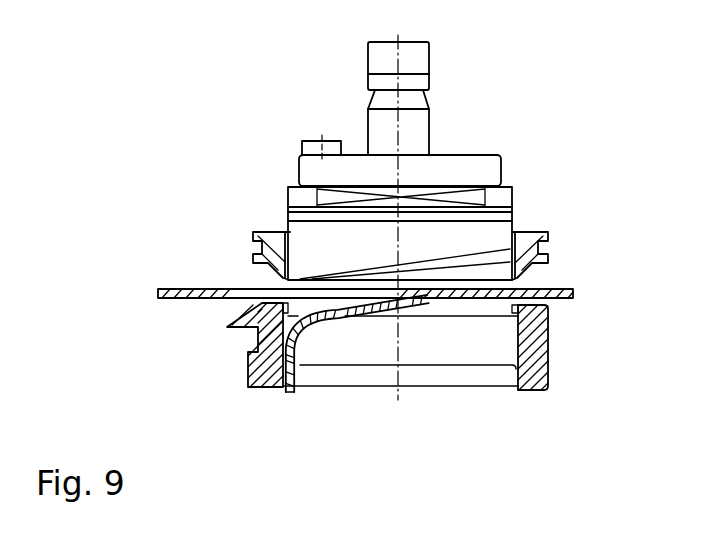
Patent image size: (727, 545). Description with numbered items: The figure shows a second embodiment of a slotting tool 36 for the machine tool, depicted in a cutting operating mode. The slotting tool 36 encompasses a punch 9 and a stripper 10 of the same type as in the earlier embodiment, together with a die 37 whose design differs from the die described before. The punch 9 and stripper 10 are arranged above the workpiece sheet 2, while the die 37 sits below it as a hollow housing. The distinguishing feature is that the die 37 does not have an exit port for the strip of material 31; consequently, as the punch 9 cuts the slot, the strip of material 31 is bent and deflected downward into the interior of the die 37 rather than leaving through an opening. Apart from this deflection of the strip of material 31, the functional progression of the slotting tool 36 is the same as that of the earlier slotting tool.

The carrier plate 2 is at (193, 291).
The punch 9 is at (516, 180).
The stripper 10 is at (272, 233).
The strip of material 31 is at (305, 348).
The slotting tool 36 is at (556, 268).
The die 37 is at (565, 356).